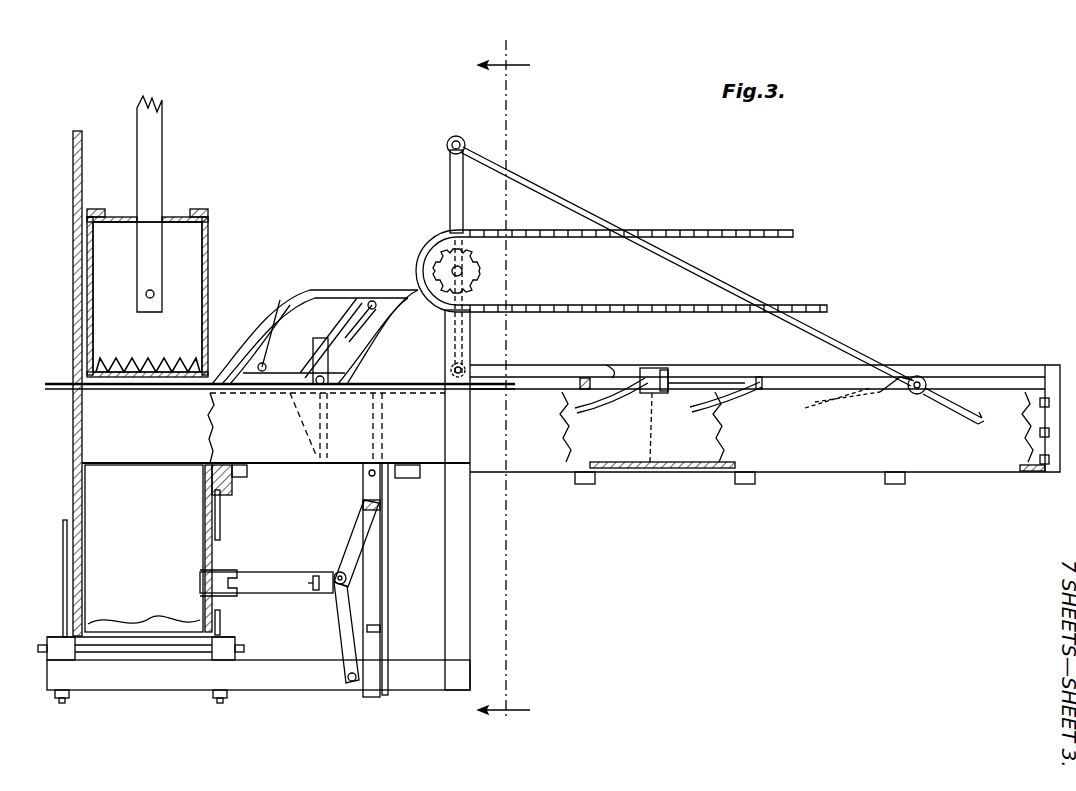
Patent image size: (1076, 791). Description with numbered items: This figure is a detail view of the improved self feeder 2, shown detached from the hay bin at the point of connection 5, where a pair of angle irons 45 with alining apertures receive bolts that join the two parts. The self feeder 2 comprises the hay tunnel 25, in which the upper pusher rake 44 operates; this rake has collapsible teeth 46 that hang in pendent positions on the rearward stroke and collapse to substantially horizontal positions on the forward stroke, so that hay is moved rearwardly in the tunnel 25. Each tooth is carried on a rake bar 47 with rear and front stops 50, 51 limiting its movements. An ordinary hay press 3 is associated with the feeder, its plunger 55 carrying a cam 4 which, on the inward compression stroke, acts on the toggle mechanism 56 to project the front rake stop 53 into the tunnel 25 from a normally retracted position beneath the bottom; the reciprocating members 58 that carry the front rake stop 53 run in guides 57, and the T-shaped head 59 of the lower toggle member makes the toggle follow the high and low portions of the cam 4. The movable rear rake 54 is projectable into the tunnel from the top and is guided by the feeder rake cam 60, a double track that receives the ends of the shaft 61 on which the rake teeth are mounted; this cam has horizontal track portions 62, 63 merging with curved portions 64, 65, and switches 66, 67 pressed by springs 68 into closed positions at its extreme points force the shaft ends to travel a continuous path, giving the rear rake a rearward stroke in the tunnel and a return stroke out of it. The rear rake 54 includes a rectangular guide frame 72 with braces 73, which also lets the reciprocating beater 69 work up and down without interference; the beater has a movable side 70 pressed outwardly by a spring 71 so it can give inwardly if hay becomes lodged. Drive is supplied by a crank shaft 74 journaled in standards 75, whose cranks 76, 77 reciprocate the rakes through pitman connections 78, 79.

The self feeder 2 is at (748, 232).
The hay press 3 is at (65, 581).
The cam 4 is at (285, 580).
The point of connection 5 is at (1042, 443).
The hay tunnel 25 is at (860, 460).
The upper pusher rake 44 is at (652, 368).
The angle irons 45 is at (1042, 470).
The collapsible teeth 46 is at (600, 400).
The rake bar 47 is at (703, 387).
The rear stop 50 is at (616, 378).
The front stop 51 is at (665, 395).
The front rake stop 53 is at (400, 393).
The movable rear rake 54 is at (342, 448).
The plunger 55 is at (166, 550).
The toggle mechanism 56 is at (342, 618).
The guides 57 is at (389, 552).
The reciprocating members 58 is at (375, 615).
The head 59 is at (336, 574).
The feeder rake cam 60 is at (315, 337).
The shaft 61 is at (335, 361).
The horizontal track portion 62 is at (267, 386).
The horizontal track portion 63 is at (340, 300).
The curved portion 64 is at (255, 335).
The curved portion 65 is at (382, 340).
The switch 66 is at (280, 348).
The switch 67 is at (390, 318).
The springs 68 is at (280, 342).
The reciprocating beater 69 is at (174, 234).
The movable side 70 is at (210, 266).
The spring 71 is at (124, 358).
The rectangular guide frame 72 is at (148, 389).
The braces 73 is at (292, 410).
The crank shaft 74 is at (465, 272).
The standards 75 is at (468, 437).
The crank 76 is at (448, 192).
The crank 77 is at (470, 337).
The pitman connection 78 is at (742, 290).
The pitman connection 79 is at (395, 378).